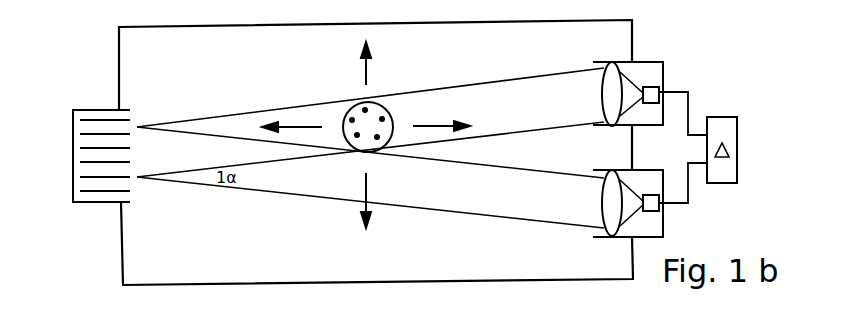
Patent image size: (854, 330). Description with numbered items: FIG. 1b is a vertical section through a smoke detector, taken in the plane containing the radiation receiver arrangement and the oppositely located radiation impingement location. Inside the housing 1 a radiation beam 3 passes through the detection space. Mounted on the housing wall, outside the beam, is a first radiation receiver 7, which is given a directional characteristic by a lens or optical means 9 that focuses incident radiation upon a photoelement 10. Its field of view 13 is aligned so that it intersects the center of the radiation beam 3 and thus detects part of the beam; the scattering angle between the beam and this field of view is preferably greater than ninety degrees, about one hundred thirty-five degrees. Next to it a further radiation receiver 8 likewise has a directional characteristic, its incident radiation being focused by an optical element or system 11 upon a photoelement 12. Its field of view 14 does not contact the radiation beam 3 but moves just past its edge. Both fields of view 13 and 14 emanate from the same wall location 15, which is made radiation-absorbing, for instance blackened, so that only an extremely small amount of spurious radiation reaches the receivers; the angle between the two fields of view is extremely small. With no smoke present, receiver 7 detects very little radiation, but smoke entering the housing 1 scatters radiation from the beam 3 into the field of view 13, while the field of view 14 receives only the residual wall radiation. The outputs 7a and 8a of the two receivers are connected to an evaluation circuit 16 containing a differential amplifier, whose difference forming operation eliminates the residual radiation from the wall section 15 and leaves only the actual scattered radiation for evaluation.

The housing 1 is at (120, 227).
The radiation beam 3 is at (373, 110).
The first radiation receiver 7 is at (643, 70).
The output of first radiation receiver 7a is at (693, 127).
The further radiation receiver 8 is at (643, 178).
The output of further radiation receiver 8a is at (693, 170).
The lens or optical means 9 is at (608, 76).
The photoelement 10 is at (655, 92).
The optical element or system 11 is at (612, 210).
The photoelement 12 is at (655, 210).
The field of view of first radiation receiver 13 is at (370, 122).
The field of view of further radiation receiver 14 is at (370, 177).
The wall location 15 is at (118, 113).
The evaluation circuit 16 is at (728, 118).